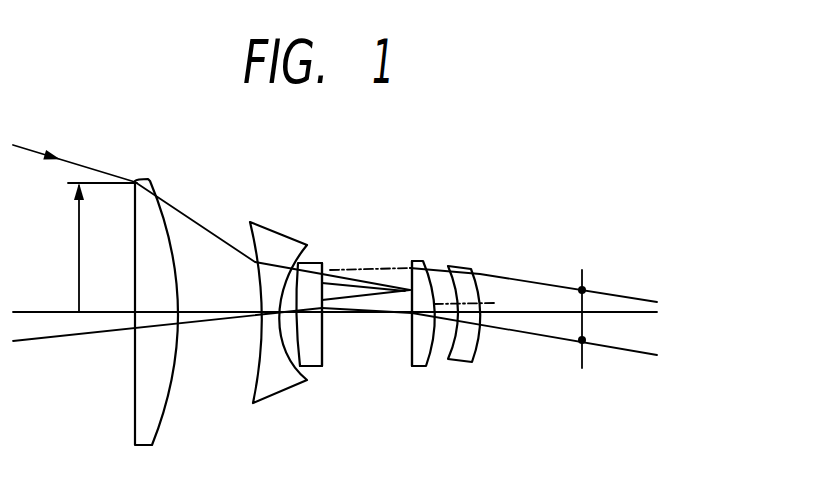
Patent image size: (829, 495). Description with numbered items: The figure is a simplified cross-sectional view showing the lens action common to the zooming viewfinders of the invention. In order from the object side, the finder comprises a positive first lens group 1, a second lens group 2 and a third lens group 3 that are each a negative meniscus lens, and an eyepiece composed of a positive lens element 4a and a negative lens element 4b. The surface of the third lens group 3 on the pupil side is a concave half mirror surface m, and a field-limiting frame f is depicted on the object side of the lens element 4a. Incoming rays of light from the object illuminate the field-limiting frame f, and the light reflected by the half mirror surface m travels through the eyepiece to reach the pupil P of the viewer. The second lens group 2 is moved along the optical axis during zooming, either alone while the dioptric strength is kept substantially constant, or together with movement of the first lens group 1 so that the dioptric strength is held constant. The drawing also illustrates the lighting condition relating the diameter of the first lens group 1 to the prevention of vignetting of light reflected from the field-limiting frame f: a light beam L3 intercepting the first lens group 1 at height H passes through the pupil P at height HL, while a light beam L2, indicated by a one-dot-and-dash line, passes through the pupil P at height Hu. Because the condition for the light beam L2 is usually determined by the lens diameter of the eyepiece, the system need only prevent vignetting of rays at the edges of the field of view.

The first lens group 1 is at (153, 408).
The second lens group 2 is at (270, 382).
The third lens group 3 is at (310, 355).
The half mirror surface m is at (325, 352).
The field-limiting frame f is at (410, 337).
The positive lens element 4a is at (418, 367).
The negative lens element 4b is at (462, 363).
The pupil P is at (582, 367).
The height HU Hu is at (584, 290).
The height HL is at (583, 341).
The height H is at (96, 247).
The light beam L3 is at (91, 167).
The light beam L2 is at (38, 342).